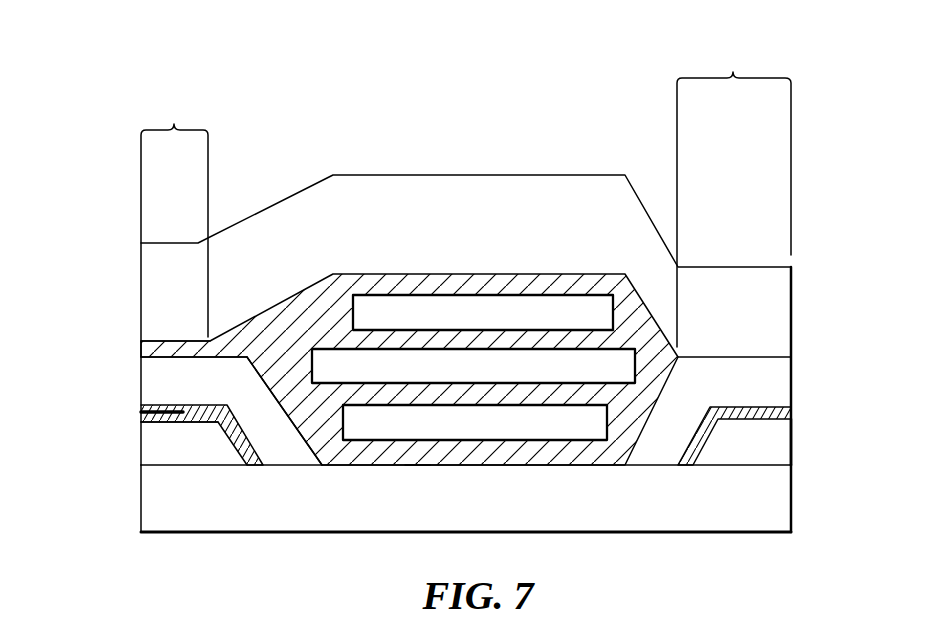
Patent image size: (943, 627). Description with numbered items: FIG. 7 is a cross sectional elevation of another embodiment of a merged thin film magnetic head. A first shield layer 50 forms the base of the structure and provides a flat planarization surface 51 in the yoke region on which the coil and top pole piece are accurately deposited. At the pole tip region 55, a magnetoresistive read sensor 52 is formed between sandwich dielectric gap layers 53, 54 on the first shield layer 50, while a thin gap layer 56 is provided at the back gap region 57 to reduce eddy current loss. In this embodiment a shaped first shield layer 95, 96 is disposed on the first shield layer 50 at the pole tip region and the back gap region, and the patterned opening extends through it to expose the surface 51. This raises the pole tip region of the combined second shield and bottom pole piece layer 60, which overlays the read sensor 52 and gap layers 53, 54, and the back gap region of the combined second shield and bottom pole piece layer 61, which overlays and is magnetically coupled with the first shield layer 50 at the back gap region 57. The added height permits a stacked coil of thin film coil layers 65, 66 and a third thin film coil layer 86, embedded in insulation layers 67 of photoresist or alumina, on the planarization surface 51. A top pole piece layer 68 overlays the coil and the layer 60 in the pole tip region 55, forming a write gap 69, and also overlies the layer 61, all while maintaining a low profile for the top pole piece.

The first shield layer 50 is at (792, 512).
The planarization surface 51 is at (417, 465).
The read sensor 52 is at (141, 413).
The dielectric gap layer 53 is at (141, 418).
The dielectric gap layer 54 is at (141, 407).
The pole tip region 55 is at (174, 216).
The thin gap layer 56 is at (792, 409).
The back gap region 57 is at (734, 194).
The combined second shield and bottom pole piece layer 60 is at (141, 382).
The combined second shield and bottom pole piece layer 61 is at (792, 374).
The thin film coil layer 65 is at (563, 434).
The thin film coil layer 66 is at (563, 378).
The insulation layer 67 is at (406, 274).
The top pole piece layer 68 is at (384, 175).
The write gap 69 is at (141, 348).
The third thin film coil layer 86 is at (563, 324).
The shaped first shield layer 95 is at (141, 443).
The shaped first shield layer 96 is at (792, 450).